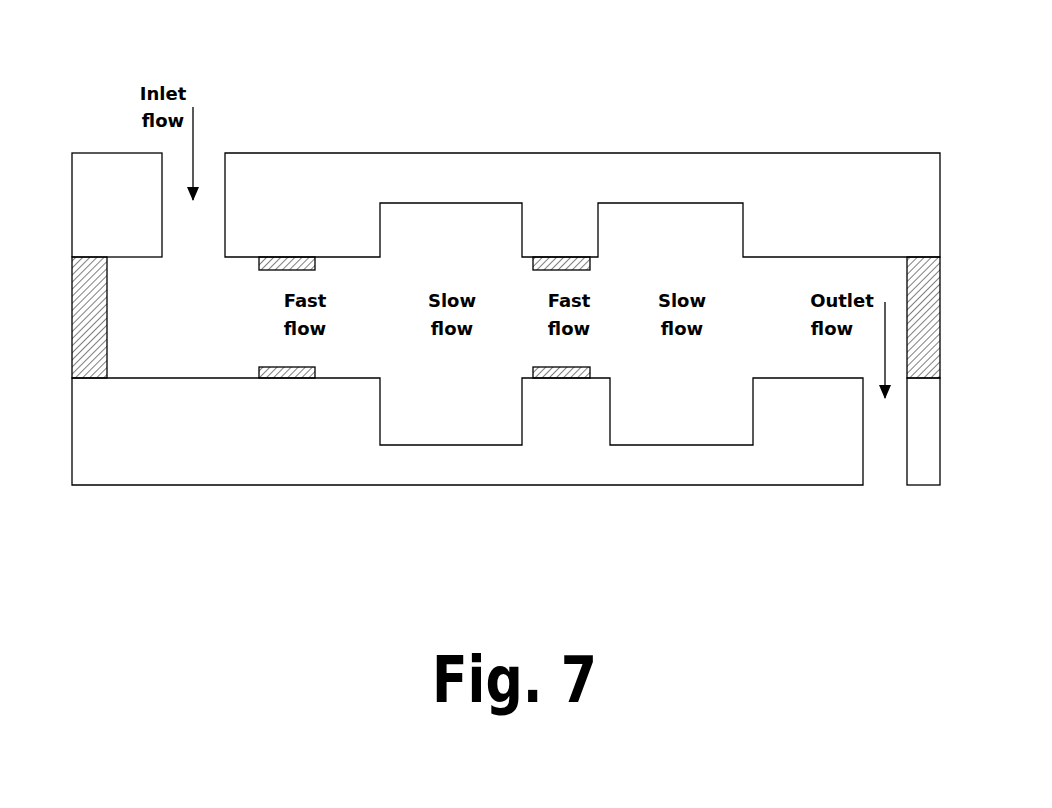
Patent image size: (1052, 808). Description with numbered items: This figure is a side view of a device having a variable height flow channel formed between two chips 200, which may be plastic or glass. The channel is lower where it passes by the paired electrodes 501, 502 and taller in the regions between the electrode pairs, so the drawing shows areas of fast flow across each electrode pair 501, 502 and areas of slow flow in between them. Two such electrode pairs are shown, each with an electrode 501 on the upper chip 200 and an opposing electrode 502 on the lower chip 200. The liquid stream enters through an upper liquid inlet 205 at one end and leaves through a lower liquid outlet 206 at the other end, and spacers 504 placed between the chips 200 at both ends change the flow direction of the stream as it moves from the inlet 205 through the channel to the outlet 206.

The chip 200 is at (777, 180).
The upper liquid inlet 205 is at (209, 112).
The lower liquid outlet 206 is at (874, 332).
The electrode 501 is at (285, 265).
The electrode 502 is at (277, 376).
The spacer 504 is at (84, 305).